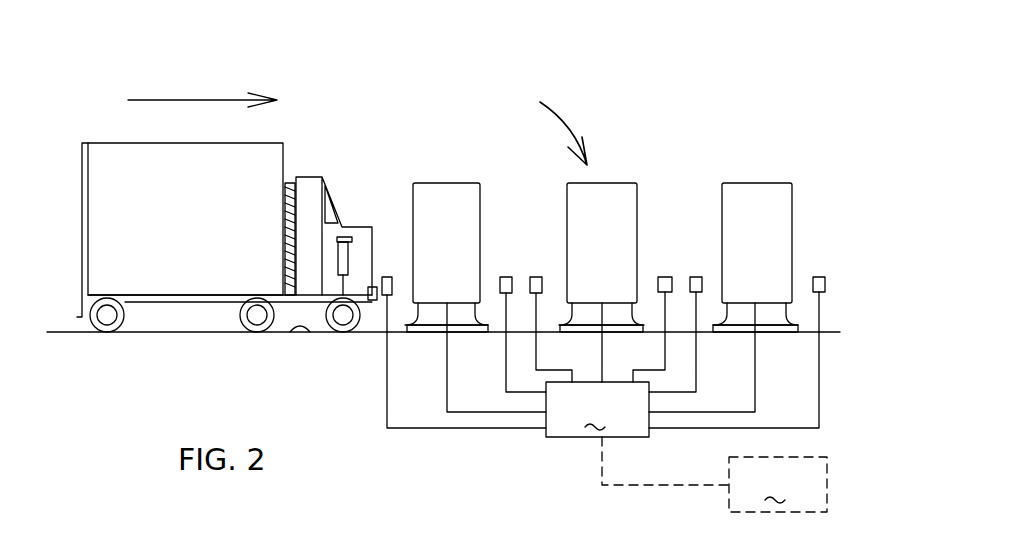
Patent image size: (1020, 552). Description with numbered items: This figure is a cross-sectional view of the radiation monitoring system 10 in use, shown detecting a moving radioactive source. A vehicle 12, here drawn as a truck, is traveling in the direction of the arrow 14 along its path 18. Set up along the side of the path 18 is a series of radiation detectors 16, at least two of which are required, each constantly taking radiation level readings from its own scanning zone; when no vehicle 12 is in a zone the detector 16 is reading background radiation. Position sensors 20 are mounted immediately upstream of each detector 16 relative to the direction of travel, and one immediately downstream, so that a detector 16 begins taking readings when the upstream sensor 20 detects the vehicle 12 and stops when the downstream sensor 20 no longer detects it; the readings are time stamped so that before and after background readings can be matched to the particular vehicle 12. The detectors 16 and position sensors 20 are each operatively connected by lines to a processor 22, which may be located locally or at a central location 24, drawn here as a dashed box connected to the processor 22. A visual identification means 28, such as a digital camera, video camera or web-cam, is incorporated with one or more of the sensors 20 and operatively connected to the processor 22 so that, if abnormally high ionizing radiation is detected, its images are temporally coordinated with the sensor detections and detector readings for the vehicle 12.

The radiation monitoring system 10 is at (541, 121).
The vehicle 12 is at (195, 298).
The arrow 14 is at (207, 100).
The radiation detectors 16 is at (452, 182).
The path 18 is at (296, 330).
The position sensor 20 is at (388, 277).
The processor 22 is at (603, 364).
The central location 24 is at (714, 474).
The visual identification means 28 is at (372, 303).